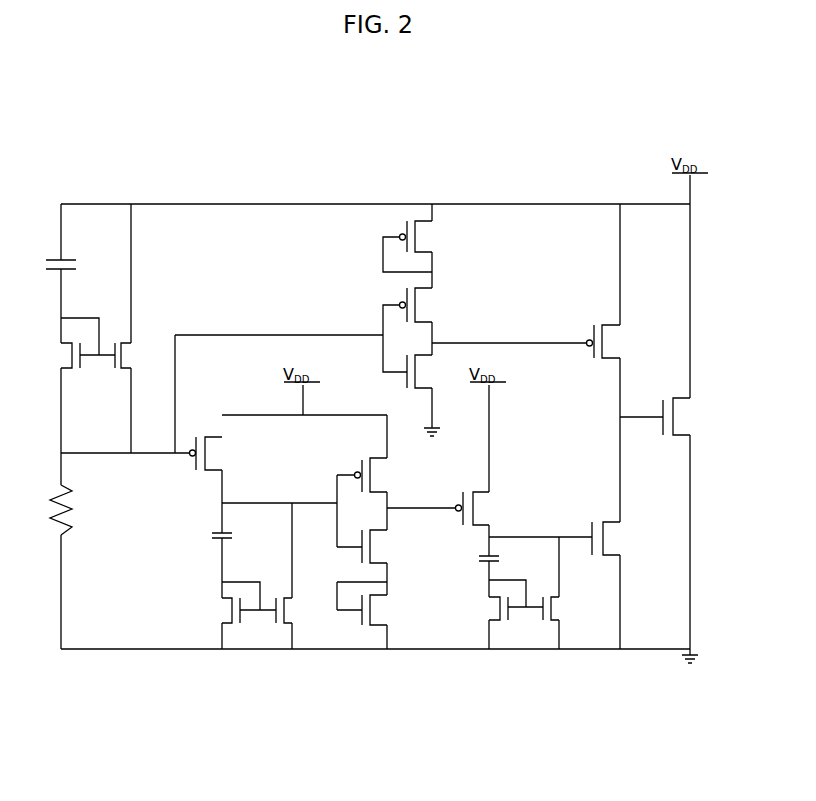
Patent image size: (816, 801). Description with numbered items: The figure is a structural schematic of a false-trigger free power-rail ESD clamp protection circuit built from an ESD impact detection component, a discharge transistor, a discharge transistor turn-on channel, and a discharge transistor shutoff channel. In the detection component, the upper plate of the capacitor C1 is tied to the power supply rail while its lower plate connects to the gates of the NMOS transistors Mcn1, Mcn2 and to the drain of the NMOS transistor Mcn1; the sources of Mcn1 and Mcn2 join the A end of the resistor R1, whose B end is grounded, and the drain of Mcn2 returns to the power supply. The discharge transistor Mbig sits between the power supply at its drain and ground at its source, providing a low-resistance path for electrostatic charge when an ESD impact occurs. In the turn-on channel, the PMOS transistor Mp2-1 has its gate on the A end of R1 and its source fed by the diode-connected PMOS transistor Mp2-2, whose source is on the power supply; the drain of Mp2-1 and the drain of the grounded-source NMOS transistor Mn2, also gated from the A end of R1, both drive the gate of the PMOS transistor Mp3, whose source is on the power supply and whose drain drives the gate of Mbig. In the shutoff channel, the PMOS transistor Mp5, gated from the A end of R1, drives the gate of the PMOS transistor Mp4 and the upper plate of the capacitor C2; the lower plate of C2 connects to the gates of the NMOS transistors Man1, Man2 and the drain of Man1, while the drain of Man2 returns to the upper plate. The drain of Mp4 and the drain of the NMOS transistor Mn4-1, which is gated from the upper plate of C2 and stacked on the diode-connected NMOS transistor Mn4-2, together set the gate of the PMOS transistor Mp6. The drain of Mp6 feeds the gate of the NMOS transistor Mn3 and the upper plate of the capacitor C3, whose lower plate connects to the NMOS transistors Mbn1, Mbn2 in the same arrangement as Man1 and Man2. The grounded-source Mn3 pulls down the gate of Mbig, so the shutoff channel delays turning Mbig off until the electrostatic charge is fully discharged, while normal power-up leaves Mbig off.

The capacitor C1 is at (72, 269).
The resistor R1 is at (72, 510).
The NMOS transistor Mcn1 is at (71, 343).
The NMOS transistor Mcn2 is at (139, 355).
The PMOS transistor Mp5 is at (214, 453).
The PMOS transistor Mp4 is at (380, 475).
The NMOS transistor Mn4-1 is at (388, 546).
The NMOS transistor Mn4-2 is at (388, 610).
The capacitor C2 is at (232, 538).
The NMOS transistor Man1 is at (214, 610).
The NMOS transistor Man2 is at (301, 610).
The PMOS transistor Mp2-2 is at (430, 236).
The PMOS transistor Mp2-1 is at (430, 305).
The NMOS transistor Mn2 is at (428, 371).
The PMOS transistor Mp6 is at (481, 508).
The capacitor C3 is at (498, 562).
The NMOS transistor Mbn1 is at (481, 608).
The NMOS transistor Mbn2 is at (568, 608).
The PMOS transistor Mp3 is at (612, 341).
The NMOS transistor Mn3 is at (615, 538).
The discharge transistor Mbig is at (686, 416).